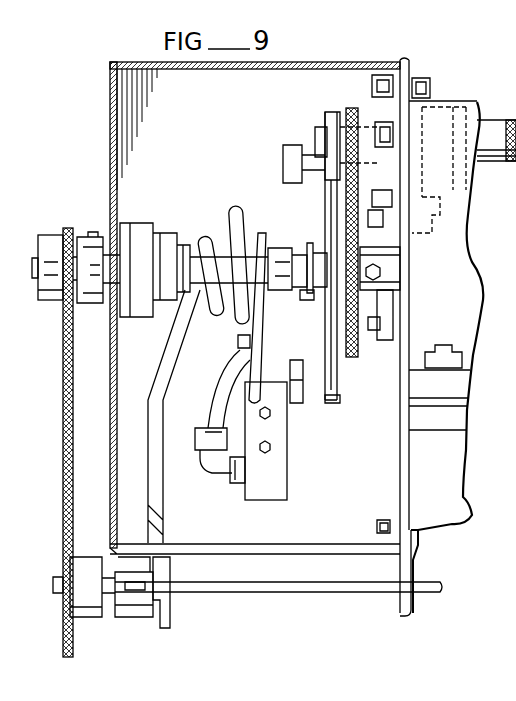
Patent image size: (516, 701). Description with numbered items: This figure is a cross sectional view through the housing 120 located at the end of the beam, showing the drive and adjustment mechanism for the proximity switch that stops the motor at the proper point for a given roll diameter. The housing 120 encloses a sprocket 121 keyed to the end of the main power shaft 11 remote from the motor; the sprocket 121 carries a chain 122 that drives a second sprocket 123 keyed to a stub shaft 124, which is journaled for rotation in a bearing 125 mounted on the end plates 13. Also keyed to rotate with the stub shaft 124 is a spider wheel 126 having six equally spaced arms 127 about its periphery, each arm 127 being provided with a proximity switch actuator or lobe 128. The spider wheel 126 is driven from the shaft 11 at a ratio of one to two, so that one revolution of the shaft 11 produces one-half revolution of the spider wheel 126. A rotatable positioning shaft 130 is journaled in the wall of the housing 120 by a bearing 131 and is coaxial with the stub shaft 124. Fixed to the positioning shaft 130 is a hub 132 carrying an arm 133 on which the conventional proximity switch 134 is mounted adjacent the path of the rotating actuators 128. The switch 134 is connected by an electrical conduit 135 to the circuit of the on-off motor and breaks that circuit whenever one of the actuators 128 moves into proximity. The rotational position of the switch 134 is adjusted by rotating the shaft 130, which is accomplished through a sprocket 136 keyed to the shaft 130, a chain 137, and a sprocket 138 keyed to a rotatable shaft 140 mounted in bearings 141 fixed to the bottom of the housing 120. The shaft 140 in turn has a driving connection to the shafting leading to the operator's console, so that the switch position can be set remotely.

The shaft 11 is at (492, 130).
The end plates 13 is at (405, 85).
The housing 120 is at (320, 62).
The sprocket 121 is at (340, 118).
The chain 122 is at (338, 203).
The second sprocket 123 is at (385, 255).
The stub shaft 124 is at (320, 258).
The bearing 125 is at (388, 315).
The spider wheel 126 is at (338, 362).
The arms 127 is at (330, 408).
The proximity switch actuator 128 is at (292, 148).
The rotatable positioning shaft 130 is at (222, 265).
The bearing 131 is at (96, 250).
The hub 132 is at (288, 252).
The arm 133 is at (258, 353).
The proximity switch 134 is at (278, 488).
The electrical conduit 135 is at (183, 370).
The sprocket 136 is at (50, 238).
The chain 137 is at (63, 366).
The sprocket 138 is at (90, 603).
The rotatable shaft 140 is at (285, 592).
The bearings 141 is at (138, 603).